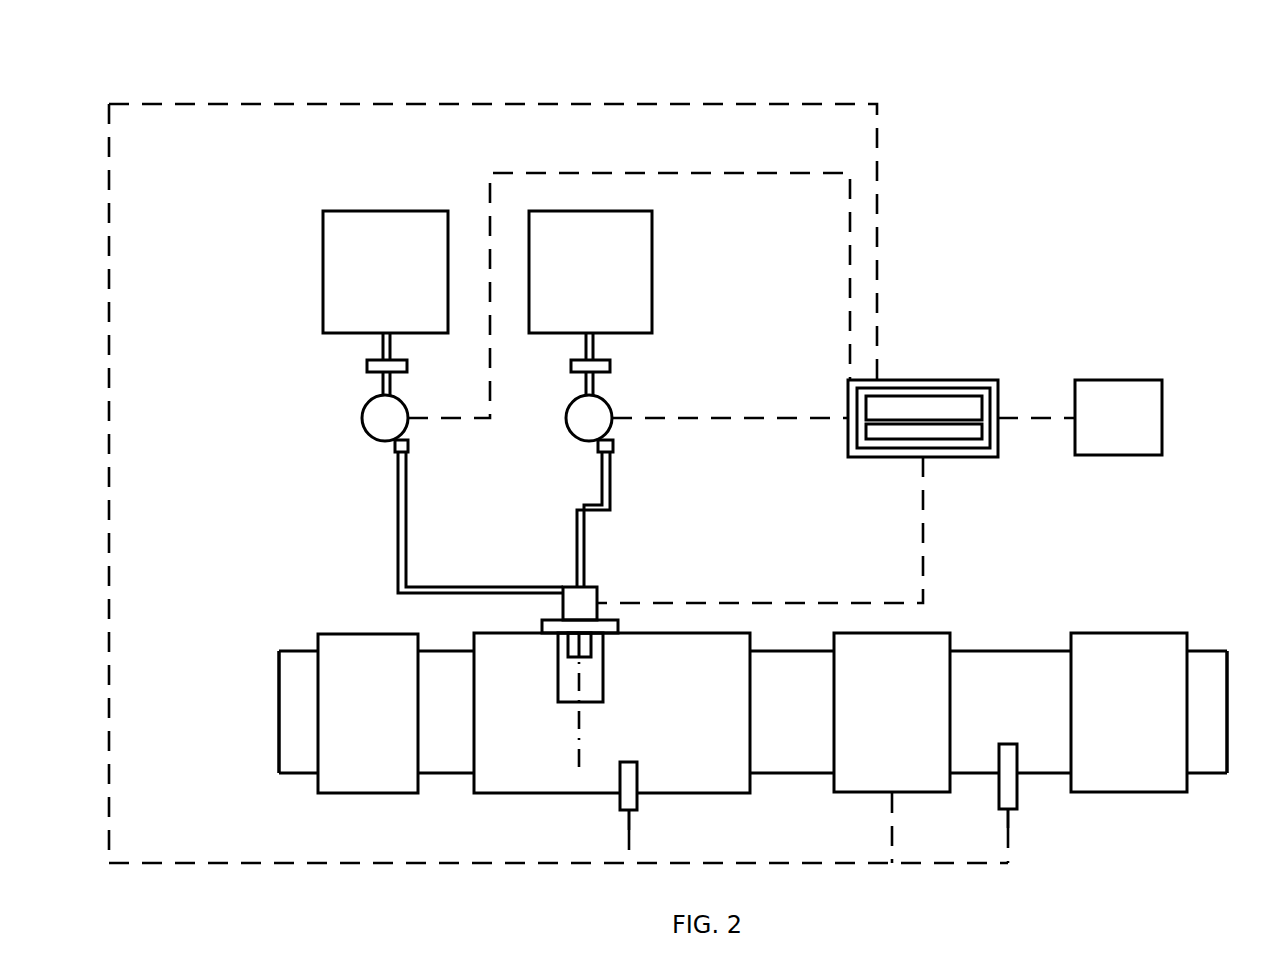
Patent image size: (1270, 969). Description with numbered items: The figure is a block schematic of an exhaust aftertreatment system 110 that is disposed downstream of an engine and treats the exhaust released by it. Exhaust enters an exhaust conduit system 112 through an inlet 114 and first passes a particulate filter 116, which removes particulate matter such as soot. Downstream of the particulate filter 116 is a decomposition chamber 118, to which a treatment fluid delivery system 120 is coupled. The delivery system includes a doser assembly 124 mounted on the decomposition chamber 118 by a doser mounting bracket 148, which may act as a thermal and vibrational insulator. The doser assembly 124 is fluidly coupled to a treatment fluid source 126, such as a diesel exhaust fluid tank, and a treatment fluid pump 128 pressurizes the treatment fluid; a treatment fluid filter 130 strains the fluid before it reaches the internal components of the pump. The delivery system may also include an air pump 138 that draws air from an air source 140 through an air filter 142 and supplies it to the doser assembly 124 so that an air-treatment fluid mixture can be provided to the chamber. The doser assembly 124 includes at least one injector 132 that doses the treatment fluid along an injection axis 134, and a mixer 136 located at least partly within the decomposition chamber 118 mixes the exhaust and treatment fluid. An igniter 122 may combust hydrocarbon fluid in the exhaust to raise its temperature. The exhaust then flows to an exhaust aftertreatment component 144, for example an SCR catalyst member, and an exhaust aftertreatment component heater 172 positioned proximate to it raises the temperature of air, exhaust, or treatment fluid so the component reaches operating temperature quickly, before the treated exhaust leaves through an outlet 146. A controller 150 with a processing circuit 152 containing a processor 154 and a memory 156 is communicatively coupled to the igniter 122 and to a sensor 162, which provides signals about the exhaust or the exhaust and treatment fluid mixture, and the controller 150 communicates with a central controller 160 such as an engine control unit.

The exhaust aftertreatment system 110 is at (715, 76).
The exhaust conduit system 112 is at (246, 767).
The inlet 114 is at (279, 756).
The particulate filter 116 is at (383, 793).
The decomposition chamber 118 is at (470, 783).
The treatment fluid delivery system 120 is at (622, 557).
The igniter 122 is at (637, 762).
The doser assembly 124 is at (609, 589).
The treatment fluid source 126 is at (653, 255).
The treatment fluid pump 128 is at (568, 427).
The treatment fluid filter 130 is at (608, 365).
The injector 132 is at (568, 645).
The injection axis 134 is at (577, 742).
The mixer 136 is at (603, 688).
The air pump 138 is at (408, 437).
The air source 140 is at (334, 211).
The air filter 142 is at (367, 363).
The exhaust aftertreatment component 144 is at (1092, 633).
The outlet 146 is at (1227, 737).
The doser mounting bracket 148 is at (542, 623).
The controller 150 is at (998, 443).
The processing circuit 152 is at (965, 388).
The processor 154 is at (905, 396).
The memory 156 is at (866, 432).
The central controller 160 is at (1117, 380).
The sensor 162 is at (1008, 744).
The exhaust aftertreatment component heater 172 is at (933, 633).